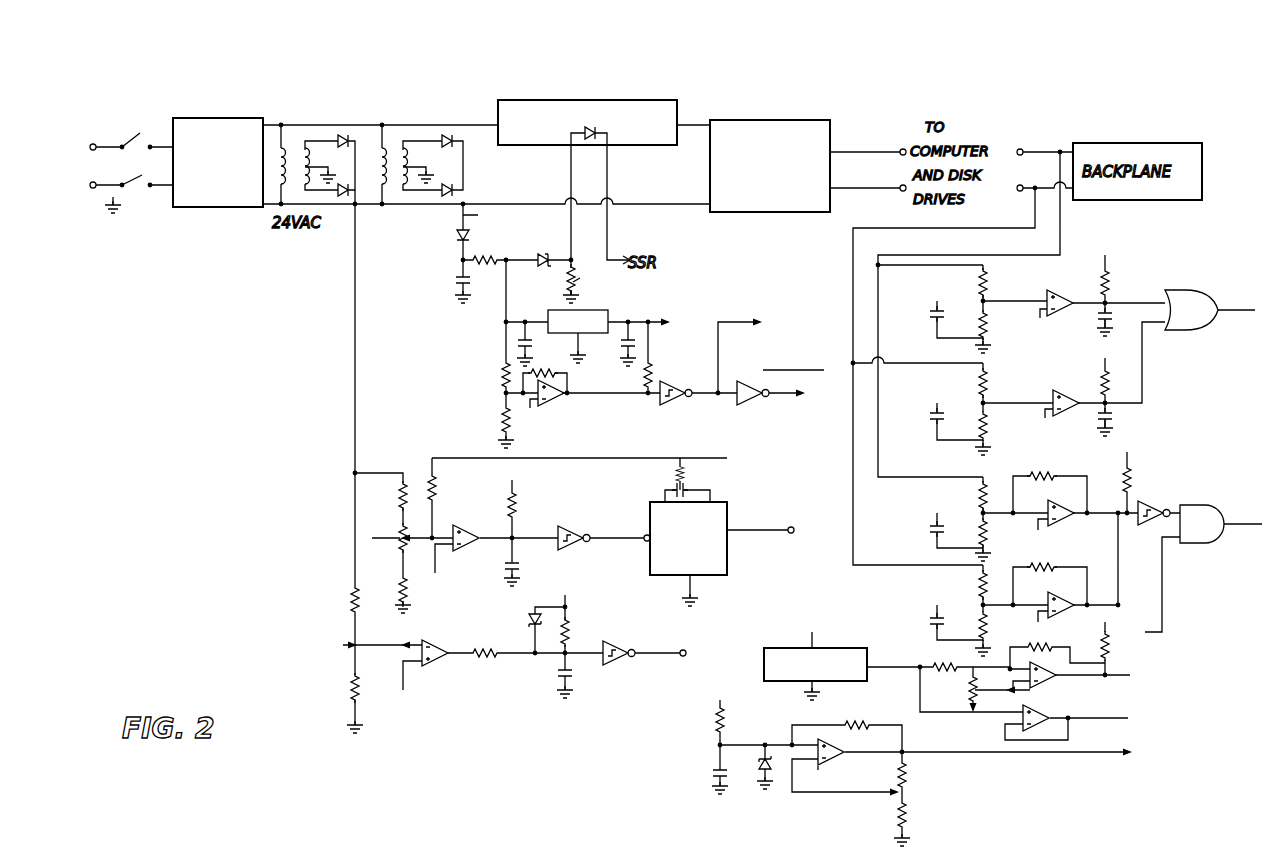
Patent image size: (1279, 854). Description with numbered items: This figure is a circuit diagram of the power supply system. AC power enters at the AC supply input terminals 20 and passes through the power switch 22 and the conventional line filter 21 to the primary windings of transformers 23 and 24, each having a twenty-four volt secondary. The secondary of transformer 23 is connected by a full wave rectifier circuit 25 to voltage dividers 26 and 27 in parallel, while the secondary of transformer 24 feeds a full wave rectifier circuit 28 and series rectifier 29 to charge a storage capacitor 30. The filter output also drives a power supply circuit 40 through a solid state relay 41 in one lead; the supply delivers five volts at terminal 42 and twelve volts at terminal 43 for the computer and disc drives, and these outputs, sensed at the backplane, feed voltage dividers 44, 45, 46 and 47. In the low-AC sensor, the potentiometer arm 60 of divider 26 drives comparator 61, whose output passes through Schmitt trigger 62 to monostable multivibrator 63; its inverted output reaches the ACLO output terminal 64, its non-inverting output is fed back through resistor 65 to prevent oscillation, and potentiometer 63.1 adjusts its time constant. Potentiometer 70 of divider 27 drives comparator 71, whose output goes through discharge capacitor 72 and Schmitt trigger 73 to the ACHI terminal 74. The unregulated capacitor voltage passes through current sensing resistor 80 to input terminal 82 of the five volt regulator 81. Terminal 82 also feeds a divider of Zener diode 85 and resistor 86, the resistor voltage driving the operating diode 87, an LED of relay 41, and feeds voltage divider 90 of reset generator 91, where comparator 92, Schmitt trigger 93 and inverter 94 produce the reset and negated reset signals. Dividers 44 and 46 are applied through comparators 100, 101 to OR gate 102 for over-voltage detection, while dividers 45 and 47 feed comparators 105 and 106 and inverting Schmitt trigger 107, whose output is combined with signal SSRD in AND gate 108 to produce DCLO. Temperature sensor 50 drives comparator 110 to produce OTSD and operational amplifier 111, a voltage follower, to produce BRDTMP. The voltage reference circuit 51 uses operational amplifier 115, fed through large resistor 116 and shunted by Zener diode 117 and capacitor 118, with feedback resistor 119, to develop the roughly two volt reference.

The AC supply input terminals 20 is at (96, 147).
The line filter 21 is at (235, 118).
The power switch 22 is at (135, 131).
The transformer 23 is at (309, 111).
The transformer 24 is at (406, 111).
The full wave rectifier circuit 25 is at (355, 111).
The voltage divider 26 is at (397, 515).
The voltage divider 27 is at (346, 588).
The full wave rectifier circuit 28 is at (455, 111).
The series rectifier 29 is at (455, 238).
The storage capacitor 30 is at (456, 282).
The power supply circuit 40 is at (764, 212).
The solid state relay 41 is at (512, 145).
The terminal 42 is at (903, 148).
The terminal 43 is at (903, 191).
The voltage divider 44 is at (976, 297).
The voltage divider 45 is at (972, 499).
The voltage divider 46 is at (972, 399).
The voltage divider 47 is at (972, 593).
The temperature sensor 50 is at (764, 662).
The voltage reference circuit 51 is at (808, 792).
The potentiometer arm 60 is at (385, 539).
The comparator 61 is at (478, 524).
The Schmitt trigger 62 is at (572, 534).
The monostable multivibrator 63 is at (727, 572).
The potentiometer 63.1 is at (680, 474).
The ACLO output terminal 64 is at (794, 533).
The resistor 65 is at (430, 478).
The potentiometer 70 is at (340, 647).
The comparator 71 is at (444, 646).
The discharge capacitor 72 is at (557, 682).
The Schmitt trigger 73 is at (626, 665).
The terminal 74 is at (684, 657).
The current sensing resistor 80 is at (478, 272).
The voltage regulator 81 is at (548, 316).
The input terminal 82 is at (504, 322).
The Zener diode 85 is at (541, 267).
The resistor 86 is at (577, 268).
The operating diode 87 is at (592, 140).
The voltage divider 90 is at (487, 385).
The reset generator 91 is at (691, 367).
The comparator 92 is at (563, 400).
The Schmitt trigger 93 is at (680, 381).
The inverter 94 is at (755, 404).
The comparator 100 is at (1080, 310).
The comparator 101 is at (1080, 410).
The OR gate 102 is at (1196, 330).
The comparator 105 is at (1078, 522).
The comparator 106 is at (1076, 614).
The inverting Schmitt trigger 107 is at (1165, 484).
The AND gate 108 is at (1200, 505).
The comparator 110 is at (1062, 681).
The operational amplifier 111 is at (1020, 714).
The operational amplifier 115 is at (838, 762).
The resistor 116 is at (713, 728).
The Zener diode 117 is at (760, 786).
The capacitor 118 is at (712, 786).
The resistor 119 is at (858, 724).